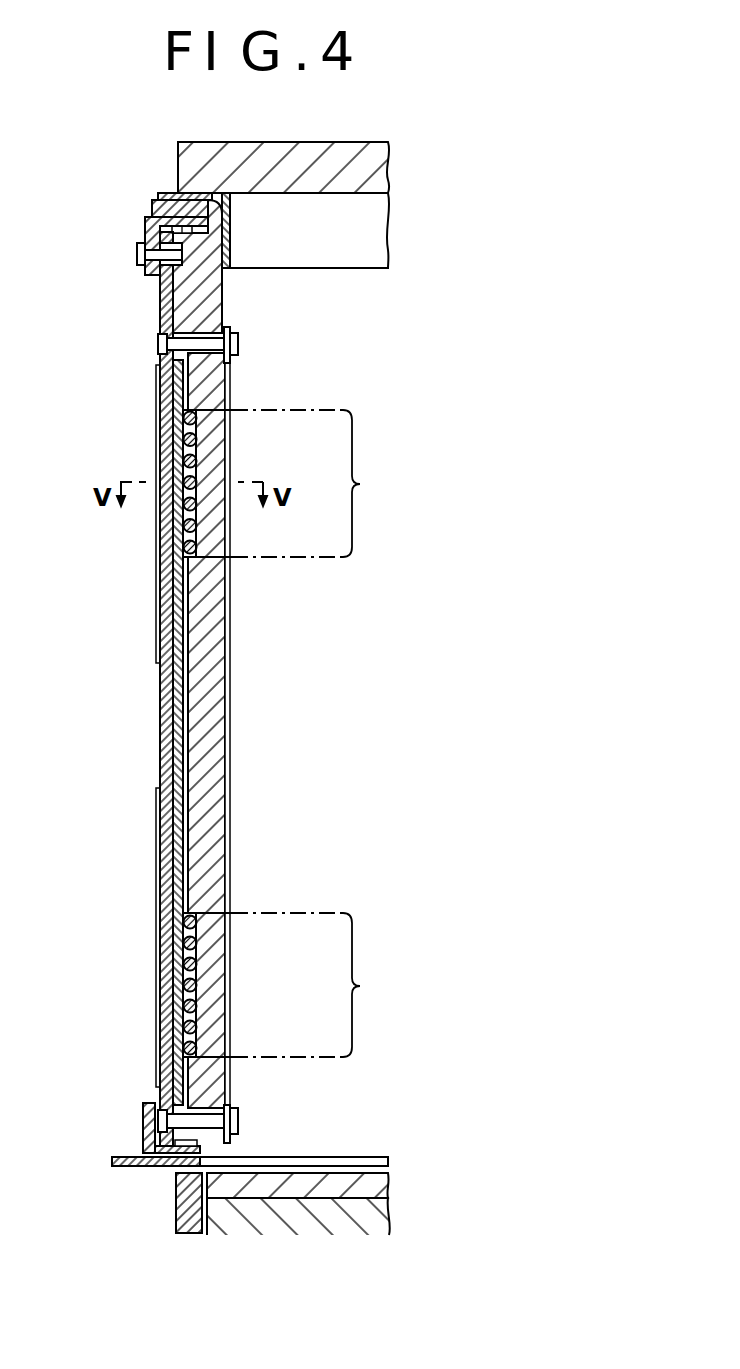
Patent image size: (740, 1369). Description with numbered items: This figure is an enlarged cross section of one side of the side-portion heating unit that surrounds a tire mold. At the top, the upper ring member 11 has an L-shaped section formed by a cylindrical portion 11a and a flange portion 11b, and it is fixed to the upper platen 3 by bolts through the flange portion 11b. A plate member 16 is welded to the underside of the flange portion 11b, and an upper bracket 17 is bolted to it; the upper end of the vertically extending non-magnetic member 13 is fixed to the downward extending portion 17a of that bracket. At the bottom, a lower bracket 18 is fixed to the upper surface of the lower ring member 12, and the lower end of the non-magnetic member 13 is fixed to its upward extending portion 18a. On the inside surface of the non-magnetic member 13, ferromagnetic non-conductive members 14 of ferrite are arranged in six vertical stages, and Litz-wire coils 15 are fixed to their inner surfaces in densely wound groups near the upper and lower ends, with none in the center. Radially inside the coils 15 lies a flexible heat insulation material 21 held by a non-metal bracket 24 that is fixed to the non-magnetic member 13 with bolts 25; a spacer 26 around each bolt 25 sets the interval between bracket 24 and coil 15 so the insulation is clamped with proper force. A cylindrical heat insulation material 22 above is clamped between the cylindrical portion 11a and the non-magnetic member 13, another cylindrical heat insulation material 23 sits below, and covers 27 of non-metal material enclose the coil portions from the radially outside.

The upper platen 3 is at (178, 165).
The upper ring member 11 is at (196, 190).
The cylindrical portion 11a is at (230, 231).
The flange portion 11b is at (160, 194).
The lower ring member 12 is at (112, 1161).
The non-magnetic member 13 is at (160, 720).
The ferromagnetic non-conductive member 14 is at (185, 402).
The coil 15 is at (290, 733).
The plate member 16 is at (152, 210).
The upper bracket 17 is at (145, 235).
The downward extending portion 17a is at (145, 272).
The lower bracket 18 is at (124, 1105).
The upward extending portion 18a is at (145, 1105).
The heat insulation material 21 is at (212, 636).
The cylindrical heat insulation material 22 is at (222, 298).
The cylindrical heat insulation material 23 is at (176, 1200).
The bracket 24 is at (230, 756).
The bolt 25 is at (238, 345).
The spacer 26 is at (230, 336).
The cover 27 is at (157, 550).